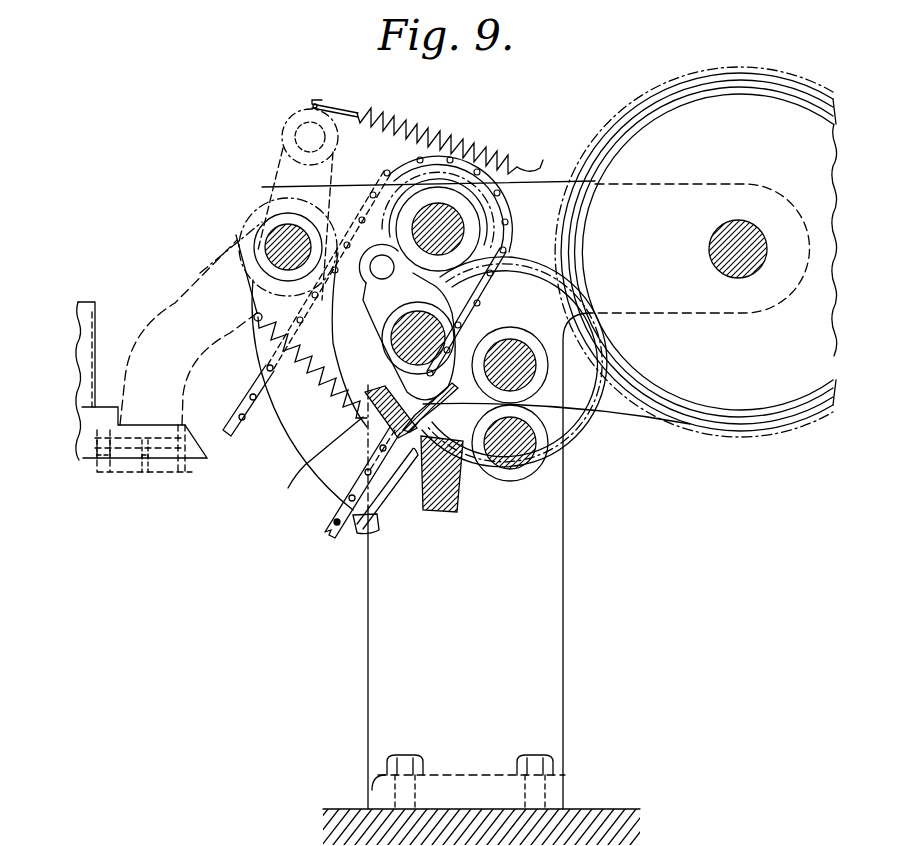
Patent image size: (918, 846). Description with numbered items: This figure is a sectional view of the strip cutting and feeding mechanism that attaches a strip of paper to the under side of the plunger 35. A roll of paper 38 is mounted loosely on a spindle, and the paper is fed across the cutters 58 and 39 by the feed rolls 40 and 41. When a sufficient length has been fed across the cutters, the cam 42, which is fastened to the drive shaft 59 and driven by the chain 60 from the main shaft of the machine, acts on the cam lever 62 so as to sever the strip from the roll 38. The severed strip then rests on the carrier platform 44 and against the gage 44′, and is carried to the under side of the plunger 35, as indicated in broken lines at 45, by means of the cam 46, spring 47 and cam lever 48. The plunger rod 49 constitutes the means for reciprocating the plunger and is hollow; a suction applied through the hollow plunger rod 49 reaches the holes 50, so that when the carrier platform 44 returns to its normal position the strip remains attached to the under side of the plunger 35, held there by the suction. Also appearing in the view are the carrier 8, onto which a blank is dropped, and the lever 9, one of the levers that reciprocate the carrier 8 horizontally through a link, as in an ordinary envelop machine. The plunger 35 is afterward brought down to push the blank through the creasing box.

The drum 38 is at (621, 120).
The carrier 8 is at (740, 235).
The cam 42 is at (442, 222).
The drive shaft 59 is at (427, 197).
The cam lever 62 is at (380, 300).
The feed roll 40 is at (542, 373).
The feed roll 41 is at (532, 470).
The cam lever 48 is at (280, 162).
The cam 46 is at (388, 127).
The spring 47 is at (445, 152).
The chain 60 is at (243, 418).
The cutter 58 is at (300, 447).
The lever 9 is at (363, 405).
The gage 44' is at (342, 502).
The carrier platform 44 is at (369, 521).
The cutter 39 is at (412, 487).
The plunger rod 49 is at (97, 316).
The plunger 35 is at (90, 460).
The holes 50 is at (93, 440).
The strip position in broken lines 45 is at (172, 300).